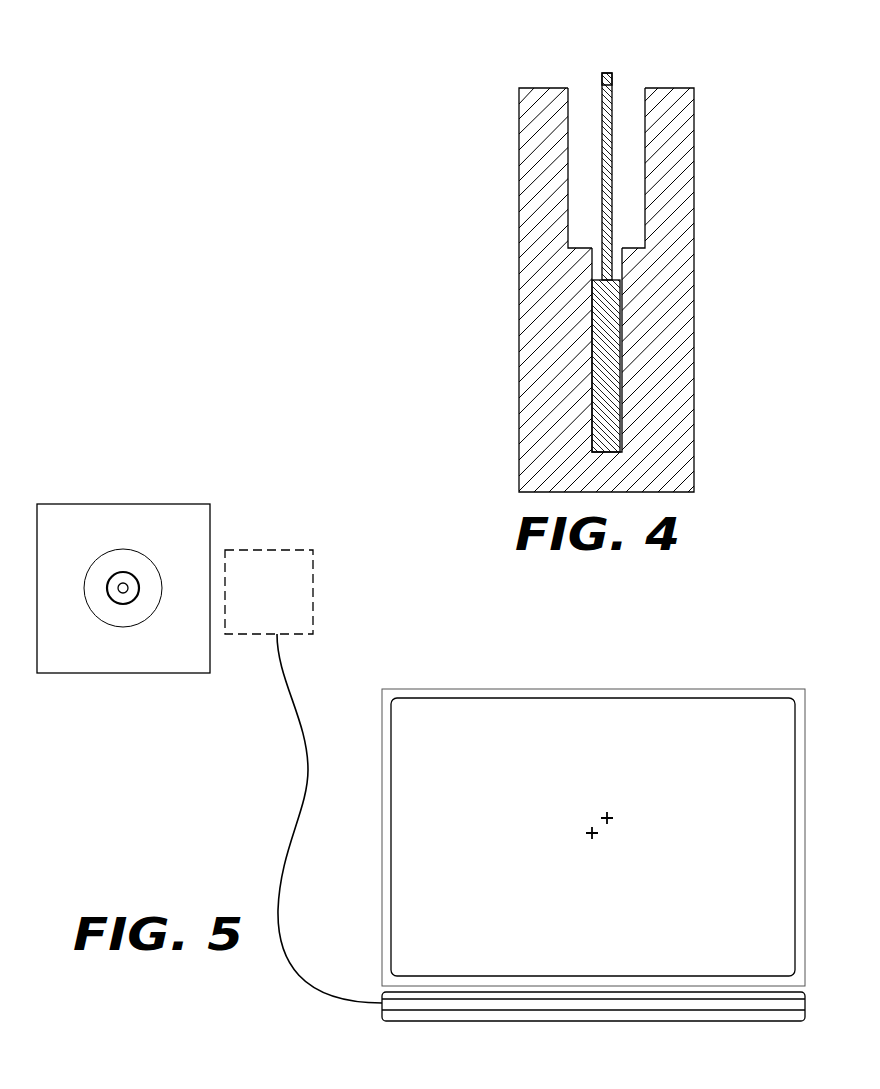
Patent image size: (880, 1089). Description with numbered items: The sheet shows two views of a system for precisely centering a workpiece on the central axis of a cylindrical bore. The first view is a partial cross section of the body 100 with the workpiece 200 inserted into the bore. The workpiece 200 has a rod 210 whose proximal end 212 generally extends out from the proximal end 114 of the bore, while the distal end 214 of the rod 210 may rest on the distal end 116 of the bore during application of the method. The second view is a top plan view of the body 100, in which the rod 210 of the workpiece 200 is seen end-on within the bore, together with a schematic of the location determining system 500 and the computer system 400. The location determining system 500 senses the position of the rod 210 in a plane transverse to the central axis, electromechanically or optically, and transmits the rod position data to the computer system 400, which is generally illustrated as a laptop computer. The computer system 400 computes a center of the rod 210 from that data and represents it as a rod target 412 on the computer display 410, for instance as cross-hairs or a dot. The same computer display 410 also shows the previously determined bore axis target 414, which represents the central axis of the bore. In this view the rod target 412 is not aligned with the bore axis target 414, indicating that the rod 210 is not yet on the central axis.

In FIG. 4, the body 100 is at (519, 122).
In FIG. 5, the body 100 is at (73, 673).
In FIG. 4, the proximal end of the bore 114 is at (626, 88).
In FIG. 4, the distal end of the bore 116 is at (610, 450).
In FIG. 4, the workpiece 200 is at (511, 267).
In FIG. 4, the rod 210 is at (507, 171).
In FIG. 5, the rod 210 is at (133, 582).
In FIG. 4, the proximal end of the rod 212 is at (603, 73).
In FIG. 4, the distal end of the rod 214 is at (610, 452).
In FIG. 5, the computer system 400 is at (593, 847).
In FIG. 5, the computer display 410 is at (503, 698).
In FIG. 5, the rod target 412 is at (607, 818).
In FIG. 5, the bore axis target 414 is at (592, 833).
In FIG. 5, the location determining system 500 is at (293, 613).